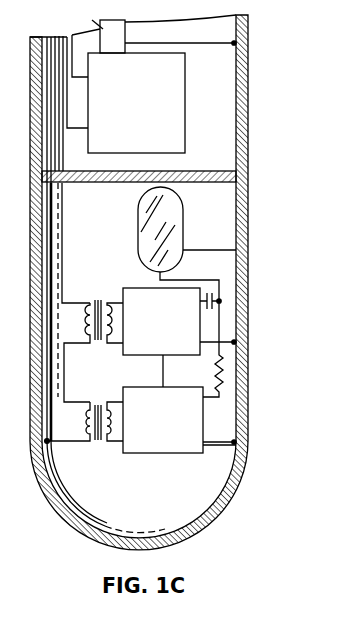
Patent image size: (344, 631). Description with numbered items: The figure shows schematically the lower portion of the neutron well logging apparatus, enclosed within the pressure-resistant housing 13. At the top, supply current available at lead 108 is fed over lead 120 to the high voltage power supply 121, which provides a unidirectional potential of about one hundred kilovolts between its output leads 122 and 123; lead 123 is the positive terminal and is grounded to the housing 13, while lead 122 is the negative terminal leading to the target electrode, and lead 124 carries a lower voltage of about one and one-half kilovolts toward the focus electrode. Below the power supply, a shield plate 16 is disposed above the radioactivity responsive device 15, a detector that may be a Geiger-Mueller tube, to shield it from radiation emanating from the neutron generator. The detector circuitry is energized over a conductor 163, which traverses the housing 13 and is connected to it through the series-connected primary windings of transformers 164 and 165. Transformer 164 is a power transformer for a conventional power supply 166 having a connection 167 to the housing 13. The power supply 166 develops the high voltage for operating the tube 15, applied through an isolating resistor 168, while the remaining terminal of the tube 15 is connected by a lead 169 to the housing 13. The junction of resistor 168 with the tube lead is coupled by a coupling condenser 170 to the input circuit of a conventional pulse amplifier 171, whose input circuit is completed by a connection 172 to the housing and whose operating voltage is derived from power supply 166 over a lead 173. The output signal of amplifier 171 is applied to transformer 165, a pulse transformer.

The pressure-resistant housing 13 is at (249, 83).
The radioactivity responsive device 15 is at (183, 228).
The shield plate 16 is at (173, 169).
The lead 108 is at (86, 75).
The lead 120 is at (70, 130).
The high voltage power supply 121 is at (187, 117).
The output lead 122 is at (127, 44).
The output lead 123 is at (217, 42).
The lead 124 is at (87, 16).
The conductor 163 is at (63, 251).
The transformer 164 is at (98, 403).
The transformer 165 is at (97, 300).
The power supply 166 is at (133, 455).
The connection 167 is at (225, 439).
The isolating resistor 168 is at (216, 385).
The lead 169 is at (188, 248).
The coupling condenser 170 is at (214, 293).
The pulse amplifier 171 is at (151, 288).
The connection 172 is at (227, 338).
The lead 173 is at (163, 379).